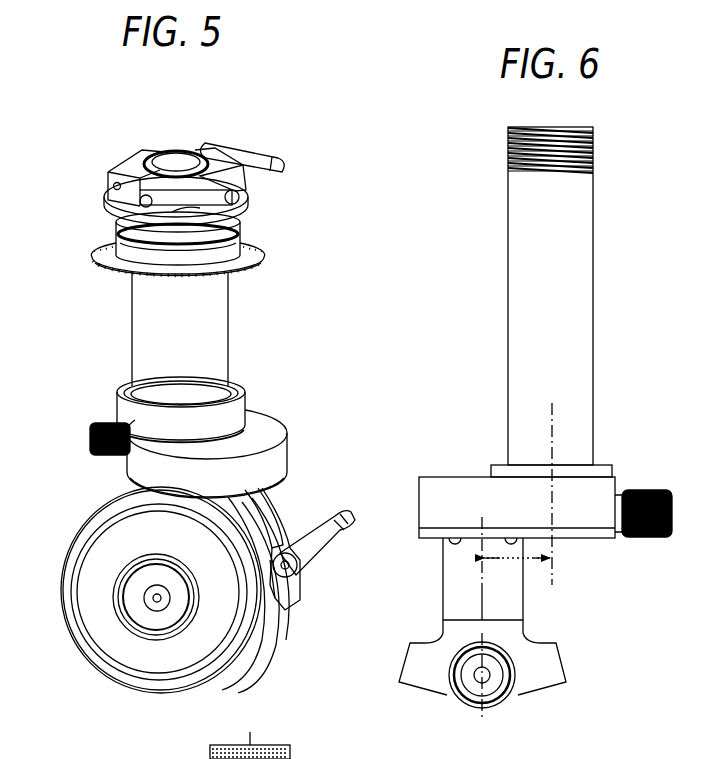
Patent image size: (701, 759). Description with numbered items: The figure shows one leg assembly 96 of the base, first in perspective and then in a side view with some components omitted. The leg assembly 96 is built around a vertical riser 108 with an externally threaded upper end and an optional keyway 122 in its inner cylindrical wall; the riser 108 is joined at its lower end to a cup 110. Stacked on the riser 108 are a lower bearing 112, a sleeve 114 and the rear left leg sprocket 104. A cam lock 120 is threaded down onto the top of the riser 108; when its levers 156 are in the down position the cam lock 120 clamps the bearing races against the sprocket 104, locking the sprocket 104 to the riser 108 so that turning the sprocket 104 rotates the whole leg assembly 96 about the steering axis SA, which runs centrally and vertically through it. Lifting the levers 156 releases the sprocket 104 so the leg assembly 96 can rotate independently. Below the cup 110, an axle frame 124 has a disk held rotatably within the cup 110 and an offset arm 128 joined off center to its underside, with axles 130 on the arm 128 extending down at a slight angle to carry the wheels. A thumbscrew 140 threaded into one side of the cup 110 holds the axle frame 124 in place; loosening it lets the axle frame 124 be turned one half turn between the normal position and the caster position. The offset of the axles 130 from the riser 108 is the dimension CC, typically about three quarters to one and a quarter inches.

In FIG. 5, the leg assembly 96 is at (236, 352).
In FIG. 5, the leg sprocket 104 is at (260, 256).
In FIG. 6, the riser 108 is at (577, 363).
In FIG. 6, the cup 110 is at (446, 487).
In FIG. 5, the lower bearing 112 is at (113, 240).
In FIG. 5, the sleeve 114 is at (152, 338).
In FIG. 5, the cam lock 120 is at (212, 162).
In FIG. 5, the keyway 122 is at (173, 150).
In FIG. 6, the axle frame 124 is at (430, 634).
In FIG. 6, the offset arm 128 is at (480, 595).
In FIG. 6, the axle 130 is at (490, 690).
In FIG. 5, the thumbscrew 140 is at (88, 436).
In FIG. 6, the thumbscrew 140 is at (646, 493).
In FIG. 5, the lever 156 is at (278, 155).
In FIG. 6, the steering axis SA is at (553, 421).
In FIG. 6, the caster offset dimension CC is at (598, 572).